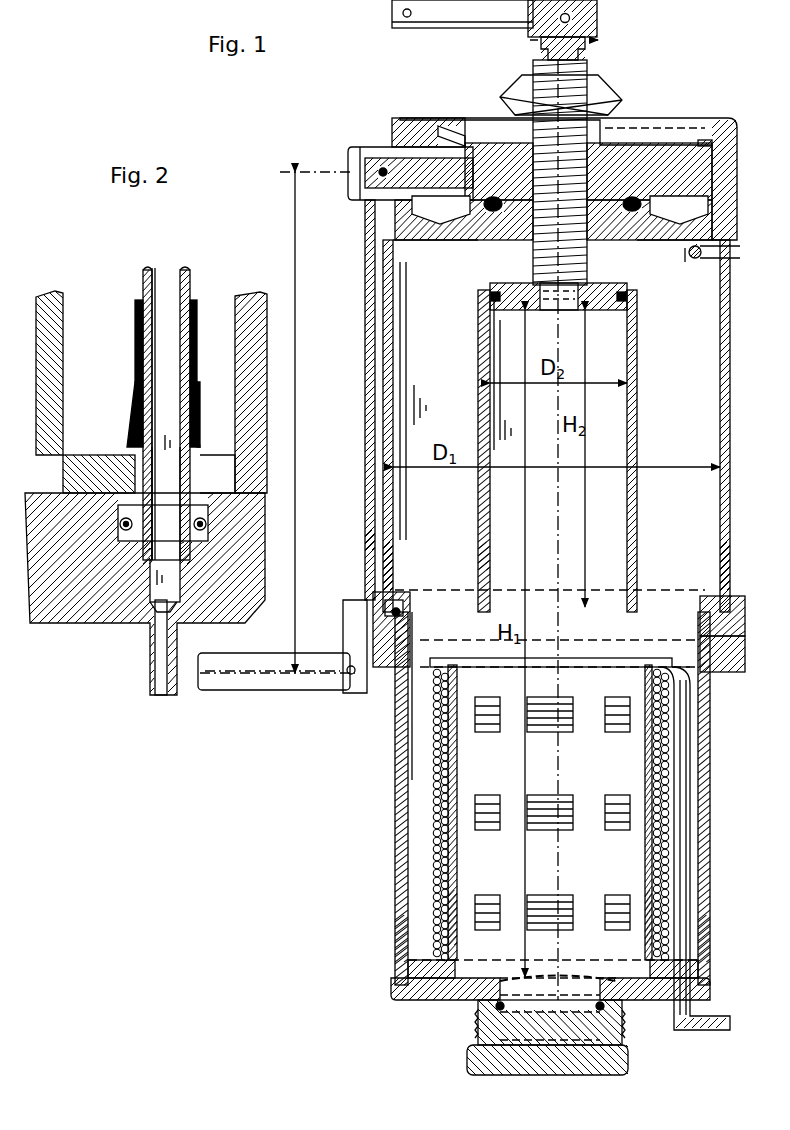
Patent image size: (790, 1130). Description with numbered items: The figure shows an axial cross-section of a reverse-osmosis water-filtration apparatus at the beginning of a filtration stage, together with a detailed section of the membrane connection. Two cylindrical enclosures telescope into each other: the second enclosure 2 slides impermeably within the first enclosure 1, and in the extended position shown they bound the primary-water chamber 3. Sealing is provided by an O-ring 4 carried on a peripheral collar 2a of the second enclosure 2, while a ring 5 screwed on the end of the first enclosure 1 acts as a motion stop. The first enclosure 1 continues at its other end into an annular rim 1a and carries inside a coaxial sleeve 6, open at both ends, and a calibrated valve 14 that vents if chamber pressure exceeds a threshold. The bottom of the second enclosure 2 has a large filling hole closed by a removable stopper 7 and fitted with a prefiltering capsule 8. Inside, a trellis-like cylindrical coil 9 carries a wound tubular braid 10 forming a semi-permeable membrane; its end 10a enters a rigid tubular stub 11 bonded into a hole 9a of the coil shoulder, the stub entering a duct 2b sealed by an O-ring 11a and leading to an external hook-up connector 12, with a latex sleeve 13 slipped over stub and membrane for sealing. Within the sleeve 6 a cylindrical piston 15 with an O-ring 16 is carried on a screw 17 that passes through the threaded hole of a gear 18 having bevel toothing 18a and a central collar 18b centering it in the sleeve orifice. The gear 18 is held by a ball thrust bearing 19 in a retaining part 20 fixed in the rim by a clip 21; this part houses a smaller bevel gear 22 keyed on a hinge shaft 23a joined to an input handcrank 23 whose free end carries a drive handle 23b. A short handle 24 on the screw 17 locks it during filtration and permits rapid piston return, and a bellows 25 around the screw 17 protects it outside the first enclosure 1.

In FIG. 1, the first enclosure 1 is at (720, 367).
In FIG. 1, the annular rim 1a is at (735, 215).
In FIG. 1, the second enclosure 2 is at (395, 782).
In FIG. 1, the peripheral collar 2a is at (425, 596).
In FIG. 2, the duct 2b is at (188, 566).
In FIG. 1, the primary-water chamber 3 is at (628, 673).
In FIG. 1, the O-ring 4 is at (712, 603).
In FIG. 1, the ring 5 is at (722, 676).
In FIG. 1, the coaxial sleeve 6 is at (637, 537).
In FIG. 1, the removable stopper 7 is at (632, 1057).
In FIG. 1, the prefiltering capsule 8 is at (580, 975).
In FIG. 1, the trellis-like cylindrical coil 9 is at (645, 782).
In FIG. 2, the trellis-like cylindrical coil 9 is at (55, 296).
In FIG. 2, the hole 9a is at (196, 470).
In FIG. 1, the tubular braid / tubular semi-permeable membrane 10 is at (432, 838).
In FIG. 2, the tubular braid / tubular semi-permeable membrane 10 is at (145, 275).
In FIG. 1, the membrane end 10a is at (692, 950).
In FIG. 2, the membrane end 10a is at (134, 395).
In FIG. 2, the rigid tubular stub 11 is at (134, 432).
In FIG. 2, the O-ring 11a is at (122, 530).
In FIG. 1, the external hook-up connector 12 is at (706, 1030).
In FIG. 2, the latex sleeve 13 is at (135, 332).
In FIG. 1, the calibrated valve 14 is at (738, 262).
In FIG. 1, the cylindrical piston 15 is at (606, 312).
In FIG. 1, the O-ring 16 is at (632, 297).
In FIG. 1, the screw 17 is at (610, 118).
In FIG. 1, the gear 18 is at (470, 255).
In FIG. 1, the bevel toothing 18a is at (672, 262).
In FIG. 1, the central collar 18b is at (482, 278).
In FIG. 1, the ball thrust bearing 19 is at (482, 140).
In FIG. 1, the retaining part 20 is at (468, 120).
In FIG. 1, the clip 21 is at (715, 128).
In FIG. 1, the bevel gear 22 is at (395, 135).
In FIG. 1, the input handcrank 23 is at (350, 366).
In FIG. 1, the hinge shaft 23a is at (365, 162).
In FIG. 1, the drive handle 23b is at (303, 695).
In FIG. 1, the short handle 24 is at (468, 30).
In FIG. 1, the bellows 25 is at (612, 80).